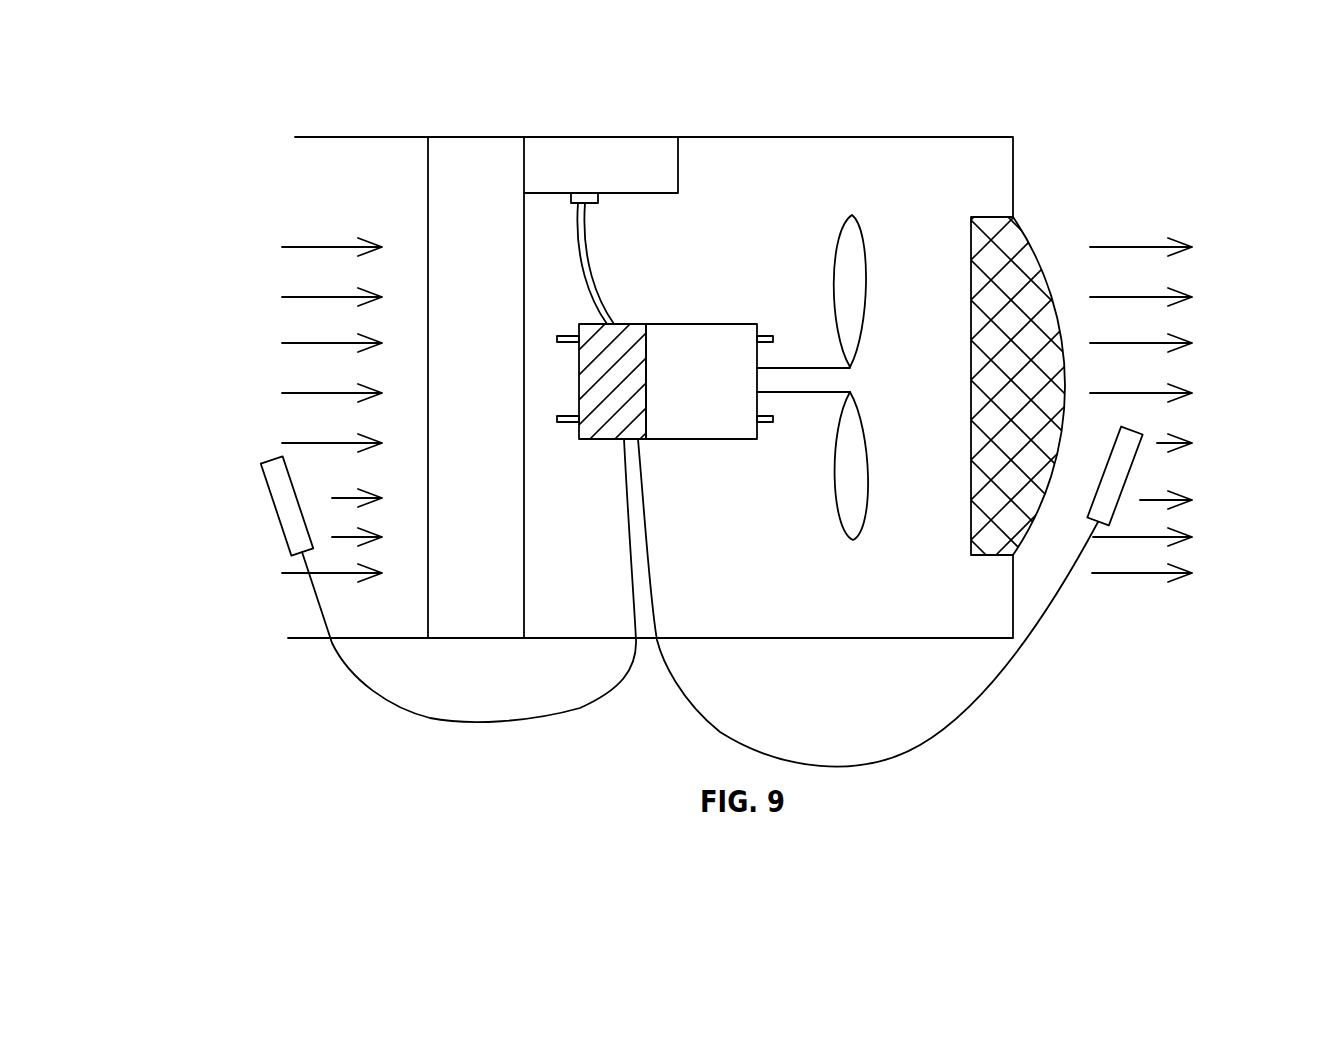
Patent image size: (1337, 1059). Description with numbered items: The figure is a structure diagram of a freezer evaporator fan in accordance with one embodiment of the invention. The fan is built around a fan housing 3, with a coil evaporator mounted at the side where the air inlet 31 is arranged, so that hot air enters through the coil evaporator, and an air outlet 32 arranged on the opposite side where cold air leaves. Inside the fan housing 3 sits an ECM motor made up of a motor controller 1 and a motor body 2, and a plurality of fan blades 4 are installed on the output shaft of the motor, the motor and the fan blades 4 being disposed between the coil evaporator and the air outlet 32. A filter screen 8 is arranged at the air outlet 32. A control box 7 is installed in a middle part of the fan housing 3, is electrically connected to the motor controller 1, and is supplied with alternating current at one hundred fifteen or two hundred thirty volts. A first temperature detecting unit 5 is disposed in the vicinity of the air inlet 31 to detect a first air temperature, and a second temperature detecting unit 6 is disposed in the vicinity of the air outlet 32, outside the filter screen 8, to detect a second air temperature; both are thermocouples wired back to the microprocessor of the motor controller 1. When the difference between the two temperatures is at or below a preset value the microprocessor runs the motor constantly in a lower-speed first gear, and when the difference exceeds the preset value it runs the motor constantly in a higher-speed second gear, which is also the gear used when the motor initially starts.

The motor controller 1 is at (634, 340).
The motor body 2 is at (726, 347).
The fan housing 3 is at (937, 157).
The fan blades 4 is at (849, 263).
The first temperature detecting unit 5 is at (290, 512).
The second temperature detecting unit 6 is at (1112, 475).
The control box 7 is at (557, 145).
The filter screen 8 is at (1007, 247).
The air inlet 31 is at (295, 210).
The air outlet 32 is at (1130, 190).